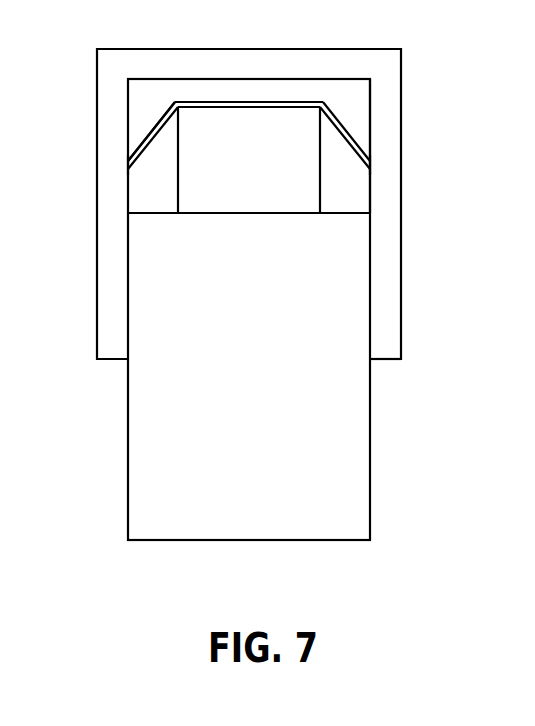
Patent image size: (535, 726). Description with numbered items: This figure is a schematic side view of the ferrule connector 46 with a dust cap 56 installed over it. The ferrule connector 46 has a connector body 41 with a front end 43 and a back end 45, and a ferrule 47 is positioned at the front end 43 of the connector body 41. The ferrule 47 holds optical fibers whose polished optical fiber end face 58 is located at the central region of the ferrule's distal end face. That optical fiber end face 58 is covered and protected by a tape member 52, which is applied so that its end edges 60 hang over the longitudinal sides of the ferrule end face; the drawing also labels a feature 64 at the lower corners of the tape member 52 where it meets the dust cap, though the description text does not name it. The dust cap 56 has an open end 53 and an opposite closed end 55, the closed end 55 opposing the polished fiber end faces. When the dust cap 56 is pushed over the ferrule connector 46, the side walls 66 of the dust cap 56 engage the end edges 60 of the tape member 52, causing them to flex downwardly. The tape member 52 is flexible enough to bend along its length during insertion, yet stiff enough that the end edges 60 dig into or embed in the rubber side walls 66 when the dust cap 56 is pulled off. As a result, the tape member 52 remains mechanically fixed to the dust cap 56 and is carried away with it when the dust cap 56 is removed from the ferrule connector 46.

The connector body 41 is at (118, 493).
The front end 43 is at (150, 213).
The back end 45 is at (333, 553).
The ferrule connector 46 is at (205, 540).
The ferrule 47 is at (297, 195).
The tape member 52 is at (152, 105).
The open end 53 is at (385, 359).
The closed end 55 is at (221, 88).
The dust cap 56 is at (401, 73).
The optical fiber end face 58 is at (233, 108).
The end edges 60 is at (137, 148).
The bend portion 64 is at (129, 161).
The side walls 66 is at (370, 100).